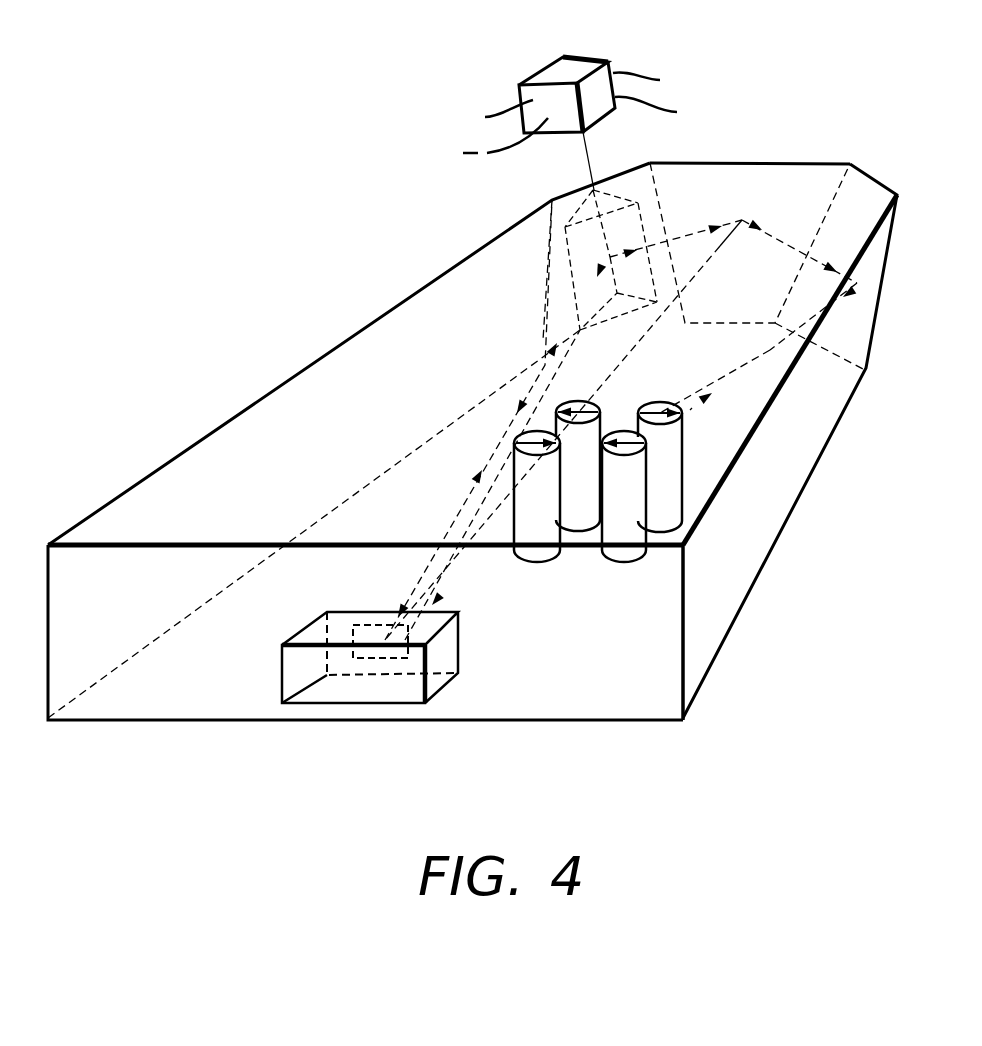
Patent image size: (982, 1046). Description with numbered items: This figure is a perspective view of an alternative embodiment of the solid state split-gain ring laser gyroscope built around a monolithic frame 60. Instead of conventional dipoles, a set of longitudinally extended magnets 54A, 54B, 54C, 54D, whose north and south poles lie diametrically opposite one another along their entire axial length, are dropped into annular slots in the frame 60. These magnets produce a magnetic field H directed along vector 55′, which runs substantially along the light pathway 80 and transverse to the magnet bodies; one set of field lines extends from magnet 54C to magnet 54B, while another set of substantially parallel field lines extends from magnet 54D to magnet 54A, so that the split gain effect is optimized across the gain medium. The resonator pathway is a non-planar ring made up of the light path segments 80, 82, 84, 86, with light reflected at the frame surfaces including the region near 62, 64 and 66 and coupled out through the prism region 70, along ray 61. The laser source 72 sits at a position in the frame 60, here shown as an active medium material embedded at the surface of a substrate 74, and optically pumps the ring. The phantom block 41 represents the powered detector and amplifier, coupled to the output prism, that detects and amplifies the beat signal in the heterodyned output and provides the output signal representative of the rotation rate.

The phantom block 41 is at (607, 62).
The frame 60 is at (405, 300).
The light ray to detector 61 is at (720, 246).
The end edge of body 62 is at (880, 184).
The top surface 64 is at (765, 176).
The window region 66 is at (617, 237).
The prism 70 is at (582, 212).
The laser source 72 is at (377, 660).
The substrate 74 is at (313, 680).
The light pathway 80 is at (780, 347).
The light path 82 is at (788, 242).
The light path 84 is at (682, 237).
The light path 86 is at (472, 490).
The magnet 54A is at (592, 402).
The magnet 54B is at (656, 402).
The magnet 54C is at (628, 552).
The magnet 54D is at (537, 552).
The vector 55′ is at (690, 410).
The magnetic field H is at (715, 381).